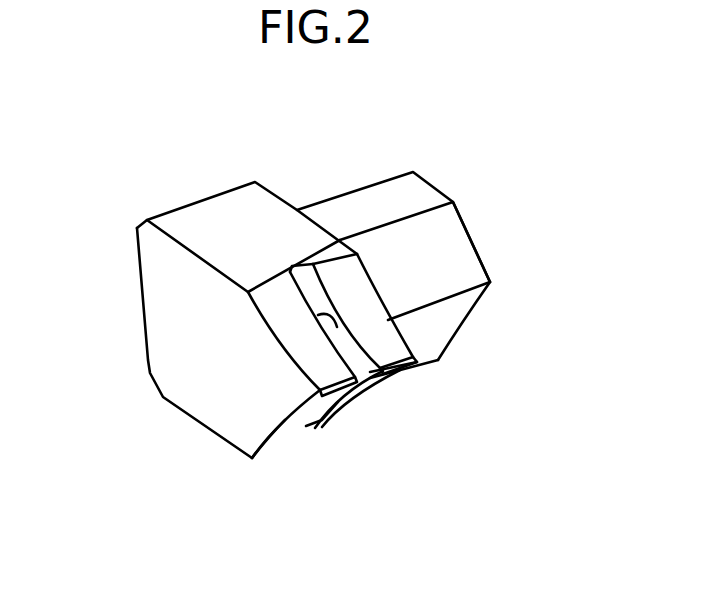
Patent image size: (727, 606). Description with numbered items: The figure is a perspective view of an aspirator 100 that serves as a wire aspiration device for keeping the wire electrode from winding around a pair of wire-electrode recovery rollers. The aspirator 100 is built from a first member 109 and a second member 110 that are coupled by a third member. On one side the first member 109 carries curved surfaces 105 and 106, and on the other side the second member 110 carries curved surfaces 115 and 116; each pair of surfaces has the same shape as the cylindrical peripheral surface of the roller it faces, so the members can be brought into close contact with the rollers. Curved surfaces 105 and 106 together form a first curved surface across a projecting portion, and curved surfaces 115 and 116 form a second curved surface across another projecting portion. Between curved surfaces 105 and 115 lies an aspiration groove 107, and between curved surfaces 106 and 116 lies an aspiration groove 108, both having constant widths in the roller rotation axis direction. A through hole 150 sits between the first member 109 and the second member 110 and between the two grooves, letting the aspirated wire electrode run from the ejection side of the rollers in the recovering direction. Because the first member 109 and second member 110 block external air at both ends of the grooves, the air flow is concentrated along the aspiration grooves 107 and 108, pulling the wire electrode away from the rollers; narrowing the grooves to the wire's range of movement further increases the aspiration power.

The aspirator 100 is at (196, 220).
The curved surface 105 is at (353, 293).
The aspiration groove 107 is at (310, 275).
The curved surface 115 is at (300, 338).
The through hole 150 is at (345, 345).
The first member 109 is at (413, 343).
The curved surface 106 is at (343, 405).
The aspiration groove 108 is at (332, 428).
The second member 110 is at (282, 415).
The curved surface 116 is at (306, 392).